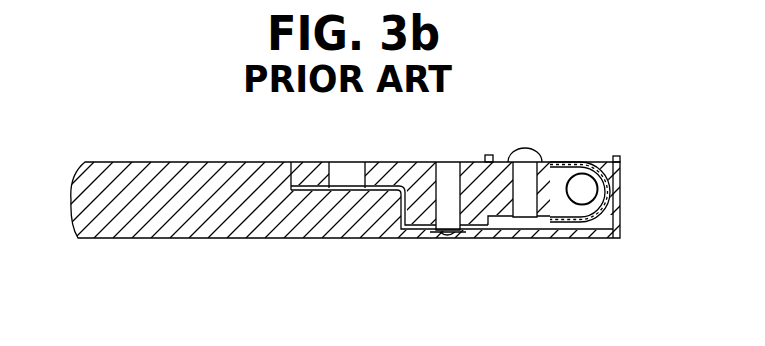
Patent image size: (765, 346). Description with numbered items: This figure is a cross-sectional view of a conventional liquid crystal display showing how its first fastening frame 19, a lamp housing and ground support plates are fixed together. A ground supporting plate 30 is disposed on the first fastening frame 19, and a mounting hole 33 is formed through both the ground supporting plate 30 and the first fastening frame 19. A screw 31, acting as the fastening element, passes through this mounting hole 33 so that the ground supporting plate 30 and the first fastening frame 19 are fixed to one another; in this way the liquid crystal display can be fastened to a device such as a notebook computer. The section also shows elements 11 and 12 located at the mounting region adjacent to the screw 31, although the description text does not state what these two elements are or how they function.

The socket contact plating 11 is at (587, 182).
The bottom pad layer 12 is at (579, 217).
The first fastening frame 19 is at (612, 200).
The ground supporting plate 30 is at (405, 229).
The screw 31 is at (538, 152).
The mounting hole 33 is at (445, 180).